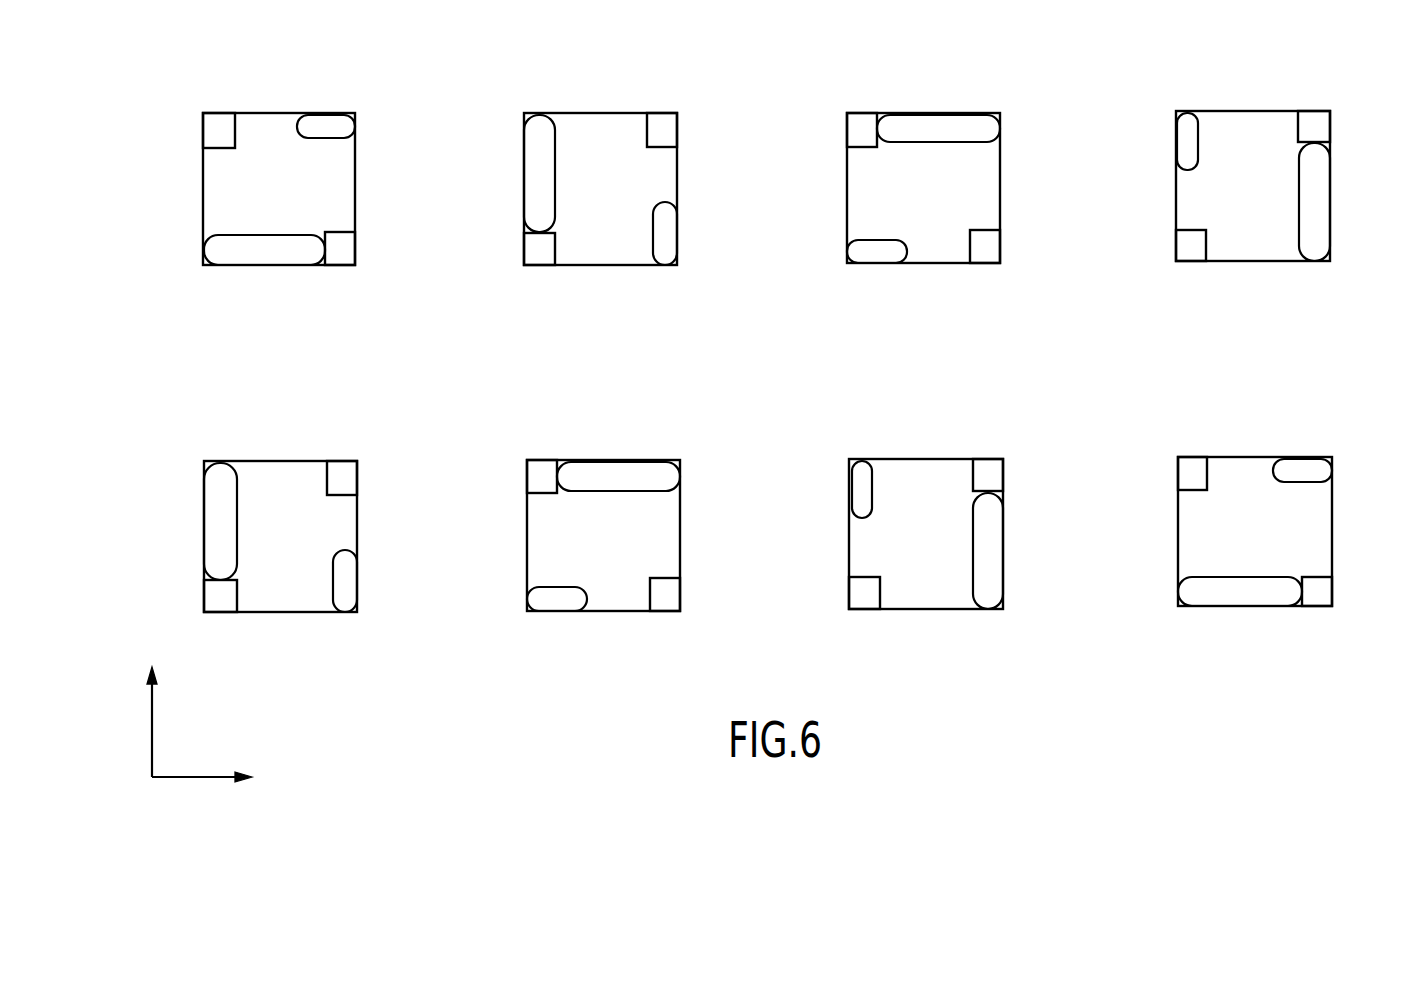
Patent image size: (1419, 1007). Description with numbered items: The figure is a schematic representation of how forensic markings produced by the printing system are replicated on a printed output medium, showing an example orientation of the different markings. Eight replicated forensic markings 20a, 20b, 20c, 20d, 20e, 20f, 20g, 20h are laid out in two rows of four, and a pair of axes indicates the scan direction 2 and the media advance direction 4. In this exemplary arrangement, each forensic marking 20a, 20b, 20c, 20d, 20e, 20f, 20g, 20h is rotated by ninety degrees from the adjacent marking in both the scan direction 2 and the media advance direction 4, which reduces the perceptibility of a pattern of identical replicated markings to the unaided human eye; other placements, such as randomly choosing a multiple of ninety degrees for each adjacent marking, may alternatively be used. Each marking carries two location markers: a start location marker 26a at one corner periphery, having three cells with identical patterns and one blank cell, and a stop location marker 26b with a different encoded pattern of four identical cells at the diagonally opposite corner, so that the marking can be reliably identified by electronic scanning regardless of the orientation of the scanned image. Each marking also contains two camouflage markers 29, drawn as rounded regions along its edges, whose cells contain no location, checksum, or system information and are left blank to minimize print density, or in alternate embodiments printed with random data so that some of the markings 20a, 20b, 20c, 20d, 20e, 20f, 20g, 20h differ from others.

The scan direction 2 is at (200, 777).
The media advance direction 4 is at (152, 727).
The forensic marking 20a is at (301, 203).
The forensic marking 20b is at (618, 203).
The forensic marking 20c is at (299, 551).
The forensic marking 20d is at (623, 551).
The forensic marking 20e is at (944, 203).
The forensic marking 20f is at (1267, 203).
The forensic marking 20g is at (945, 549).
The forensic marking 20h is at (1274, 547).
The start location marker 26a is at (203, 140).
The stop location marker 26b is at (356, 257).
The camouflage marker 29 is at (322, 125).